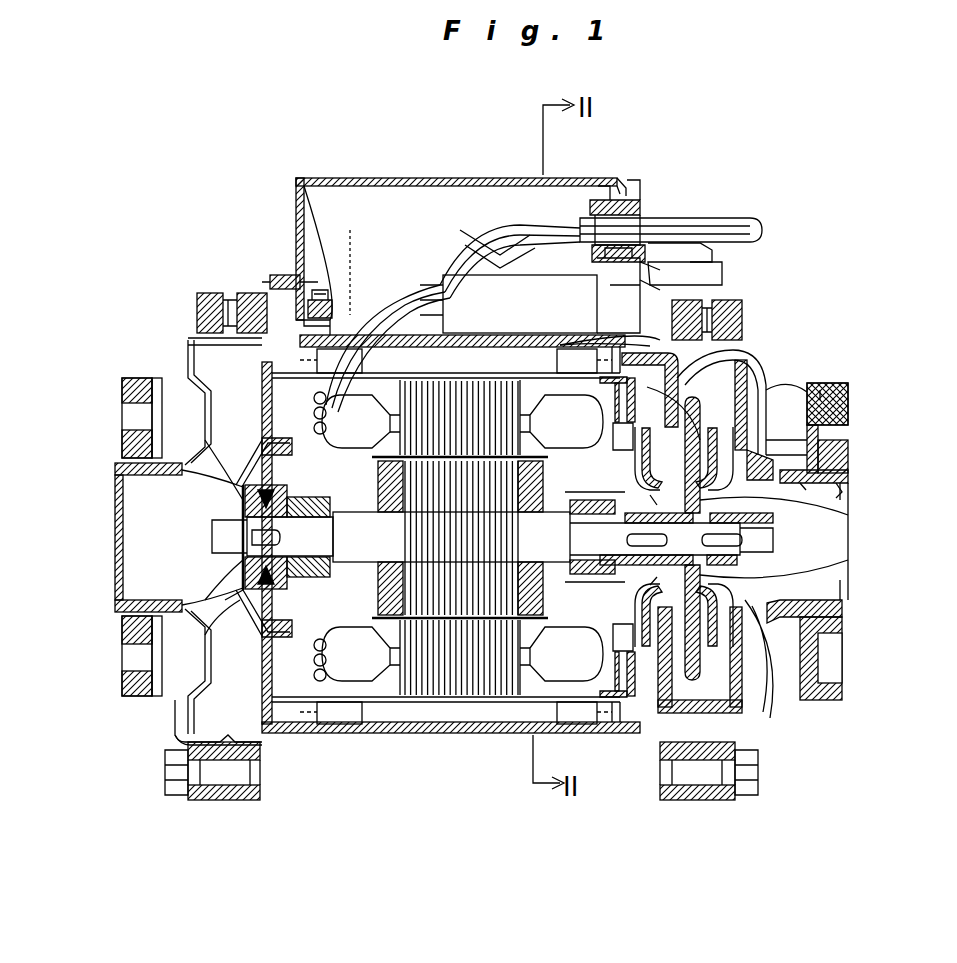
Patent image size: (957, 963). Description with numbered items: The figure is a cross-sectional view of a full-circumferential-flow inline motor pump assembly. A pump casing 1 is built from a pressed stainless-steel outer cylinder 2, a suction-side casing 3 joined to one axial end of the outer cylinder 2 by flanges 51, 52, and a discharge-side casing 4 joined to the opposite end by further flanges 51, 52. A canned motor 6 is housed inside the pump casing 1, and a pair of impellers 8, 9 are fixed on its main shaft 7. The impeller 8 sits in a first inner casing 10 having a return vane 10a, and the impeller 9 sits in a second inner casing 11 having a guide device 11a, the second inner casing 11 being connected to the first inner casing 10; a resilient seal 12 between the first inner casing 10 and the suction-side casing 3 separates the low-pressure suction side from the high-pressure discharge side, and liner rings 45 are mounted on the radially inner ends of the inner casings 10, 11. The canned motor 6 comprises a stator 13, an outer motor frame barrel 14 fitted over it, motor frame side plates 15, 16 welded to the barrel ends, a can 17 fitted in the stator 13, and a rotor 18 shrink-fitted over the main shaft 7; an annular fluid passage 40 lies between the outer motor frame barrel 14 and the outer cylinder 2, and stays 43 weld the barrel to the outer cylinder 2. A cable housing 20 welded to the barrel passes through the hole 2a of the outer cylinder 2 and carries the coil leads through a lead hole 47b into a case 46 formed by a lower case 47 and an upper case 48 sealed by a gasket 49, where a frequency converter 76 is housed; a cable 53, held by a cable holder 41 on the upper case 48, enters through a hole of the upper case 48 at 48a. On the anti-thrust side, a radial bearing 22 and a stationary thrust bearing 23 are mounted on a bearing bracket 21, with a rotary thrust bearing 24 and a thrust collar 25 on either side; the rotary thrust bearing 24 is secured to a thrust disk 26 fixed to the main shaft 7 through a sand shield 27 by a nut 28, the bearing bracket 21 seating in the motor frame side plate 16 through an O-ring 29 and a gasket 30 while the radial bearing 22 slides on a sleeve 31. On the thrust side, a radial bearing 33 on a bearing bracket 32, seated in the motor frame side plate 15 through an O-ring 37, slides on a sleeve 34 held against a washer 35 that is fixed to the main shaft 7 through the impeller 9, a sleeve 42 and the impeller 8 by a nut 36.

The pump casing 1 is at (742, 340).
The outer cylinder 2 is at (627, 335).
The hole 2a is at (306, 325).
The suction-side casing 3 is at (850, 400).
The discharge-side casing 4 is at (205, 410).
The canned motor 6 is at (625, 215).
The main shaft 7 is at (520, 300).
The impeller 8 is at (748, 432).
The impeller 9 is at (768, 365).
The first inner casing 10 is at (758, 400).
The return vane 10a is at (808, 385).
The second inner casing 11 is at (762, 380).
The guide device 11a is at (752, 350).
The resilient seal 12 is at (790, 468).
The stator 13 is at (660, 218).
The outer motor frame barrel 14 is at (705, 230).
The motor frame side plate 15 is at (600, 722).
The motor frame side plate 16 is at (185, 715).
The can 17 is at (470, 520).
The rotor 18 is at (452, 610).
The cable housing 20 is at (400, 300).
The bearing bracket 21 is at (260, 480).
The radial bearing 22 is at (245, 492).
The stationary thrust bearing 23 is at (270, 500).
The rotary thrust bearing 24 is at (245, 580).
The thrust collar 25 is at (350, 630).
The thrust disk 26 is at (245, 560).
The sand shield 27 is at (230, 590).
The nut 28 is at (215, 537).
The resilient O-ring 29 is at (262, 468).
The resilient gasket 30 is at (265, 440).
The sleeve 31 is at (265, 650).
The bearing bracket 32 is at (690, 685).
The radial bearing 33 is at (560, 700).
The sleeve 34 is at (640, 590).
The washer 35 is at (710, 660).
The nut 36 is at (790, 570).
The resilient O-ring 37 is at (605, 655).
The annular fluid passage 40 is at (418, 718).
The cable holder 41 is at (602, 200).
The sleeve 42 is at (748, 492).
The stays 43 is at (642, 300).
The liner rings 45 is at (843, 478).
The case 46 is at (406, 194).
The lower case 47 is at (298, 180).
The lead hole 47b is at (348, 305).
The upper case 48 is at (306, 178).
The cover edge 48a is at (642, 278).
The gasket 49 is at (285, 275).
The flanges 51 is at (242, 800).
The flanges 52 is at (200, 800).
The cable 53 is at (752, 232).
The frequency converter 76 is at (455, 300).